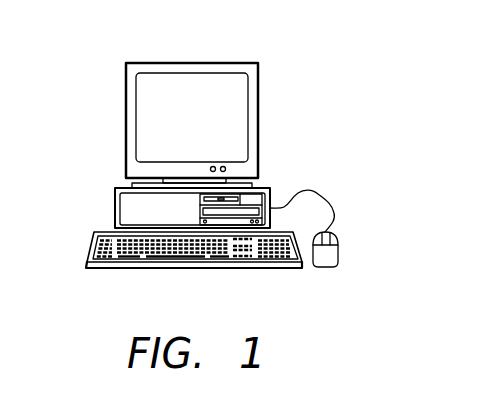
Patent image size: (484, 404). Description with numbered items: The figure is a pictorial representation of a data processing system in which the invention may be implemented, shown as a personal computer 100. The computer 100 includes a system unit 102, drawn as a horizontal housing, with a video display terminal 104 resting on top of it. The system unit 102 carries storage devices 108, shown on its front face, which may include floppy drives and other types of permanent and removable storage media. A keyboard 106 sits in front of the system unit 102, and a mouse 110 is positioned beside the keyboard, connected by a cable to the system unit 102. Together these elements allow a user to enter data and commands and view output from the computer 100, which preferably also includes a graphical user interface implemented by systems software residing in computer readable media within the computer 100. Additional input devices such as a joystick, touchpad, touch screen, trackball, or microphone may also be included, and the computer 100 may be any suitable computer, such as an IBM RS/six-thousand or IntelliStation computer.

The computer 100 is at (315, 75).
The system unit 102 is at (115, 210).
The video display terminal 104 is at (126, 120).
The keyboard 106 is at (112, 268).
The storage devices 108 is at (253, 213).
The mouse 110 is at (325, 267).